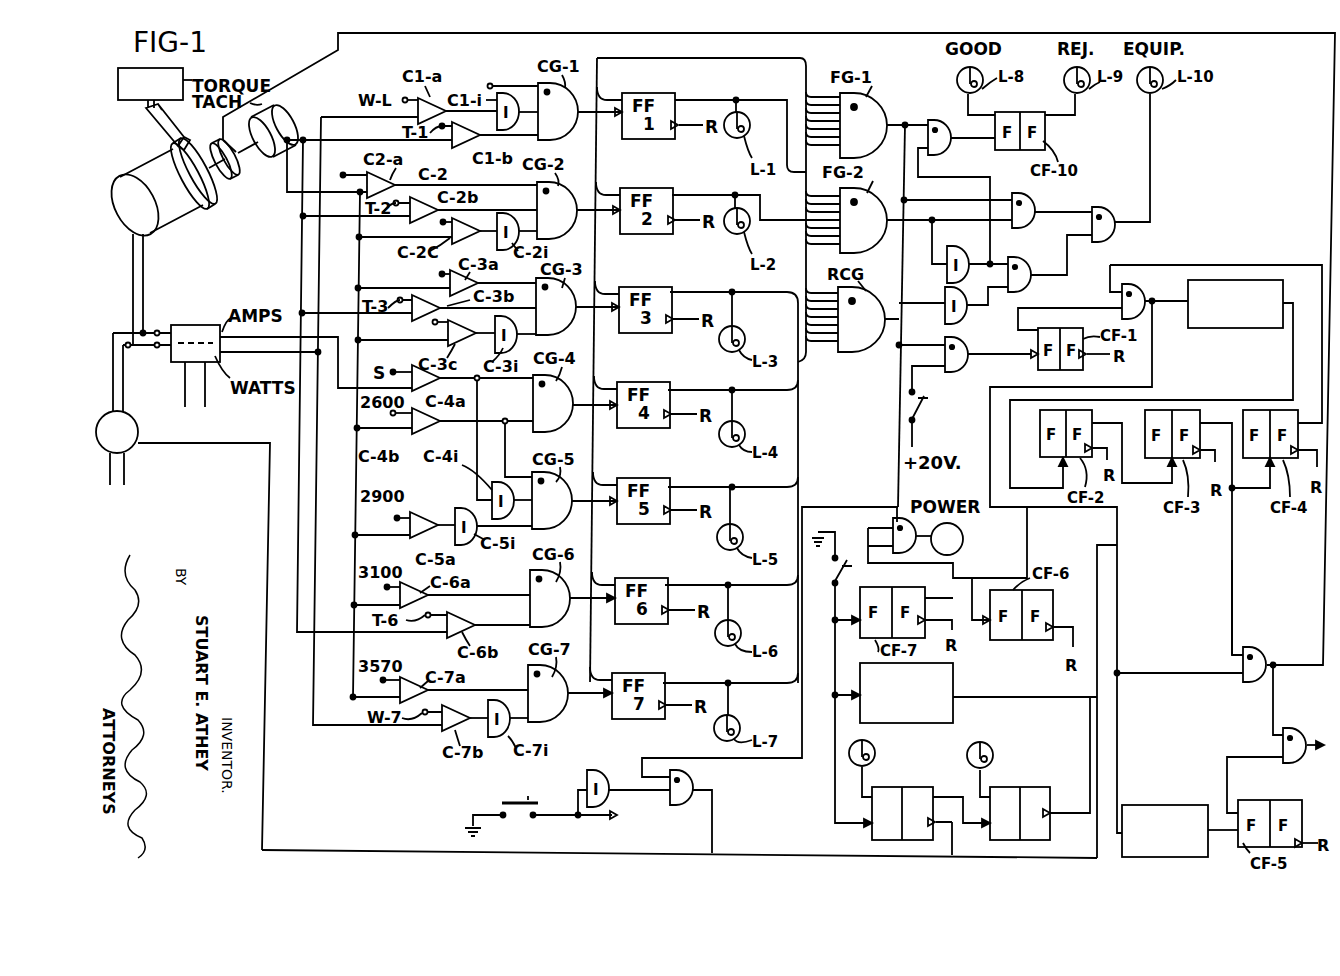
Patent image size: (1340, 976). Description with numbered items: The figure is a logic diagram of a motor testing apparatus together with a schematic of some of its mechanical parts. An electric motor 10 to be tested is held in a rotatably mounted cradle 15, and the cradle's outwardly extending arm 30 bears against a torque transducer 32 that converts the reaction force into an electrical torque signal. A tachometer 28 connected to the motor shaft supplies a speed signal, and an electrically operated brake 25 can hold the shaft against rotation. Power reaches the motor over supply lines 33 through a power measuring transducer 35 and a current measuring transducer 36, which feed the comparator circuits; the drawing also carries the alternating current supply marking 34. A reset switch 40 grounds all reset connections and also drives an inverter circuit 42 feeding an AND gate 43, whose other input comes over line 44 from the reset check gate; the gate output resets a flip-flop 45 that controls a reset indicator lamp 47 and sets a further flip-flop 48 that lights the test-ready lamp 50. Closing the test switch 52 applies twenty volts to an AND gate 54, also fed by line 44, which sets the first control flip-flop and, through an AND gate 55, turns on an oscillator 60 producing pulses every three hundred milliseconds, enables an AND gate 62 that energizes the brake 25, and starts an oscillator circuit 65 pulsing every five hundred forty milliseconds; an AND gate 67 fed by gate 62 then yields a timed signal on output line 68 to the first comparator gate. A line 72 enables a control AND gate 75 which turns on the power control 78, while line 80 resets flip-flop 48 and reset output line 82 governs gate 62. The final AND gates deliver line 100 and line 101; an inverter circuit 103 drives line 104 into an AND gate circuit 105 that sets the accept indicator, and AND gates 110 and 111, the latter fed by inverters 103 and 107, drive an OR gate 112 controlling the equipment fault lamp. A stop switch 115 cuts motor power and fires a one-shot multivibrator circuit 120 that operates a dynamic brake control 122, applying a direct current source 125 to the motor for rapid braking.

The electric motor 10 is at (116, 224).
The cradle 15 is at (203, 222).
The brake 25 is at (234, 186).
The tachometer 28 is at (268, 158).
The arm 30 is at (150, 130).
The torque transducer 32 is at (135, 73).
The power supply lines 33 is at (148, 281).
The AC supply line 34 is at (207, 402).
The power measuring transducer 35 is at (172, 350).
The current measuring transducer 36 is at (187, 326).
The reset switch 40 is at (541, 793).
The inverter circuit 42 is at (600, 765).
The AND gate 43 is at (678, 800).
The line 44 is at (898, 391).
The flip-flop circuit 45 is at (918, 787).
The indicator lamp 47 is at (876, 748).
The flip-flop 48 is at (1035, 787).
The indicator lamp 50 is at (992, 746).
The test switch 52 is at (922, 415).
The AND gate 54 is at (965, 362).
The AND gate 55 is at (1120, 301).
The oscillator 60 is at (1245, 328).
The AND gate 62 is at (1257, 647).
The oscillator circuit 65 is at (1152, 805).
The AND gate 67 is at (1283, 750).
The output line 68 is at (513, 83).
The line 72 is at (957, 578).
The control AND gate 75 is at (893, 524).
The power control 78 is at (947, 539).
The line 80 is at (1127, 530).
The reset output line 82 is at (1230, 598).
The line 100 is at (905, 122).
The line 101 is at (926, 226).
The inverter circuit 103 is at (966, 250).
The line 104 is at (941, 178).
The AND gate circuit 105 is at (939, 121).
The inverter 107 is at (968, 313).
The AND gate 110 is at (1031, 195).
The AND gate 111 is at (1031, 265).
The OR gate 112 is at (1113, 233).
The stop switch 115 is at (827, 571).
The one-shot multivibrator circuit 120 is at (953, 676).
The dynamic brake control 122 is at (130, 444).
The direct current source 125 is at (184, 646).